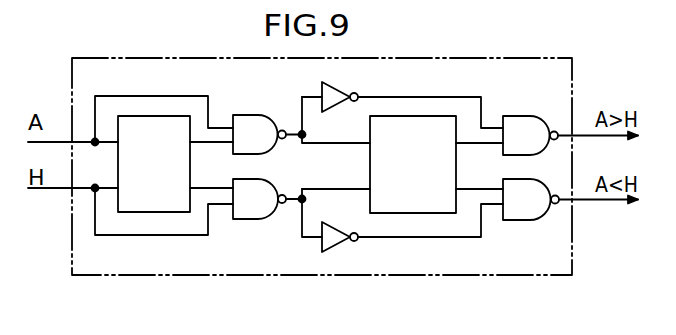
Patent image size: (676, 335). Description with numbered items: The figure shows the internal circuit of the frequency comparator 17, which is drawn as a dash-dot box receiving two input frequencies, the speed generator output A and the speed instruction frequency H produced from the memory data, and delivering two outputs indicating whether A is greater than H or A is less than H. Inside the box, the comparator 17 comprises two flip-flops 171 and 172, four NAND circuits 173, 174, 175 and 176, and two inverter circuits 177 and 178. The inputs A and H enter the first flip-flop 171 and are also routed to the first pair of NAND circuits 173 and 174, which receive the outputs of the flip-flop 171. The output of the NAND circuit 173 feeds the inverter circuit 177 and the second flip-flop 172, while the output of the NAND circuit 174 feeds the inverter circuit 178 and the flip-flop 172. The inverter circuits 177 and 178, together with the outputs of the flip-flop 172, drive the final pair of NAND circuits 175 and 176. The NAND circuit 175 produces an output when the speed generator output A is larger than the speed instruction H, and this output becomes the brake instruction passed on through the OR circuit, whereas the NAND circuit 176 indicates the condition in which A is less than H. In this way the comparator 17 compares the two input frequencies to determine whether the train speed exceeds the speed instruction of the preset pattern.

The frequency comparator 17 is at (480, 277).
The flip-flop 171 is at (160, 213).
The flip-flop 172 is at (424, 214).
The NAND circuit 173 is at (280, 144).
The NAND circuit 174 is at (262, 220).
The NAND circuit 175 is at (524, 115).
The NAND circuit 176 is at (527, 221).
The inverter circuit 177 is at (341, 86).
The inverter circuit 178 is at (336, 246).